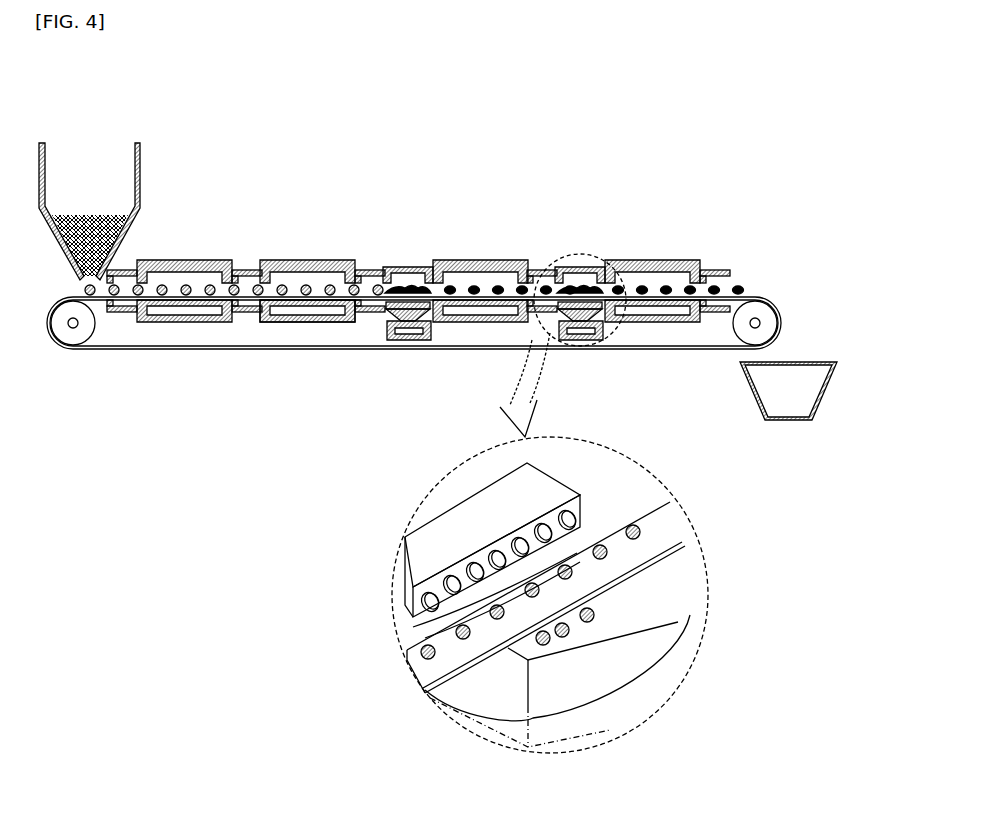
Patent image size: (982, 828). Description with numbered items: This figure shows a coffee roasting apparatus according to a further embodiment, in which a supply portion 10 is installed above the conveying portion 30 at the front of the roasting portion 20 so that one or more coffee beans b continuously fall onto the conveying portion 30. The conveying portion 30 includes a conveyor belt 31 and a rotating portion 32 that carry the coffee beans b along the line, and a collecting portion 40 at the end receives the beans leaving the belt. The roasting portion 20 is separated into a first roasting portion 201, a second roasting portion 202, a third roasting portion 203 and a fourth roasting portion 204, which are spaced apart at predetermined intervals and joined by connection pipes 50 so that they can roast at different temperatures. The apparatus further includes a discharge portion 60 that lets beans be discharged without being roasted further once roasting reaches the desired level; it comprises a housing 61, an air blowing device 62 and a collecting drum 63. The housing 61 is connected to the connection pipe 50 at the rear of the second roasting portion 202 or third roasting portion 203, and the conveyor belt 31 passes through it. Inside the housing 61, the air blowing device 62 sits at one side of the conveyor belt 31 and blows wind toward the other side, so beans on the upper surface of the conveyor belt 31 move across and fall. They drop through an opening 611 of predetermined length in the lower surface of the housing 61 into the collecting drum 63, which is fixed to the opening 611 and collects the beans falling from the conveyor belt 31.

The supply portion 10 is at (126, 138).
The roasting portion 20 is at (418, 247).
The first roasting portion 201 is at (206, 258).
The second roasting portion 202 is at (326, 261).
The third roasting portion 203 is at (478, 260).
The fourth roasting portion 204 is at (634, 269).
The conveying portion 30 is at (414, 358).
The conveyor belt 31 is at (200, 351).
The rotating portion 32 is at (88, 342).
The collecting portion 40 is at (755, 408).
The connection pipe 50 is at (361, 319).
The discharge portion 60 is at (567, 482).
The housing 61 is at (567, 487).
The opening 611 is at (409, 320).
The air blowing device 62 is at (416, 284).
The collecting drum 63 is at (425, 340).
The coffee bean b is at (640, 528).